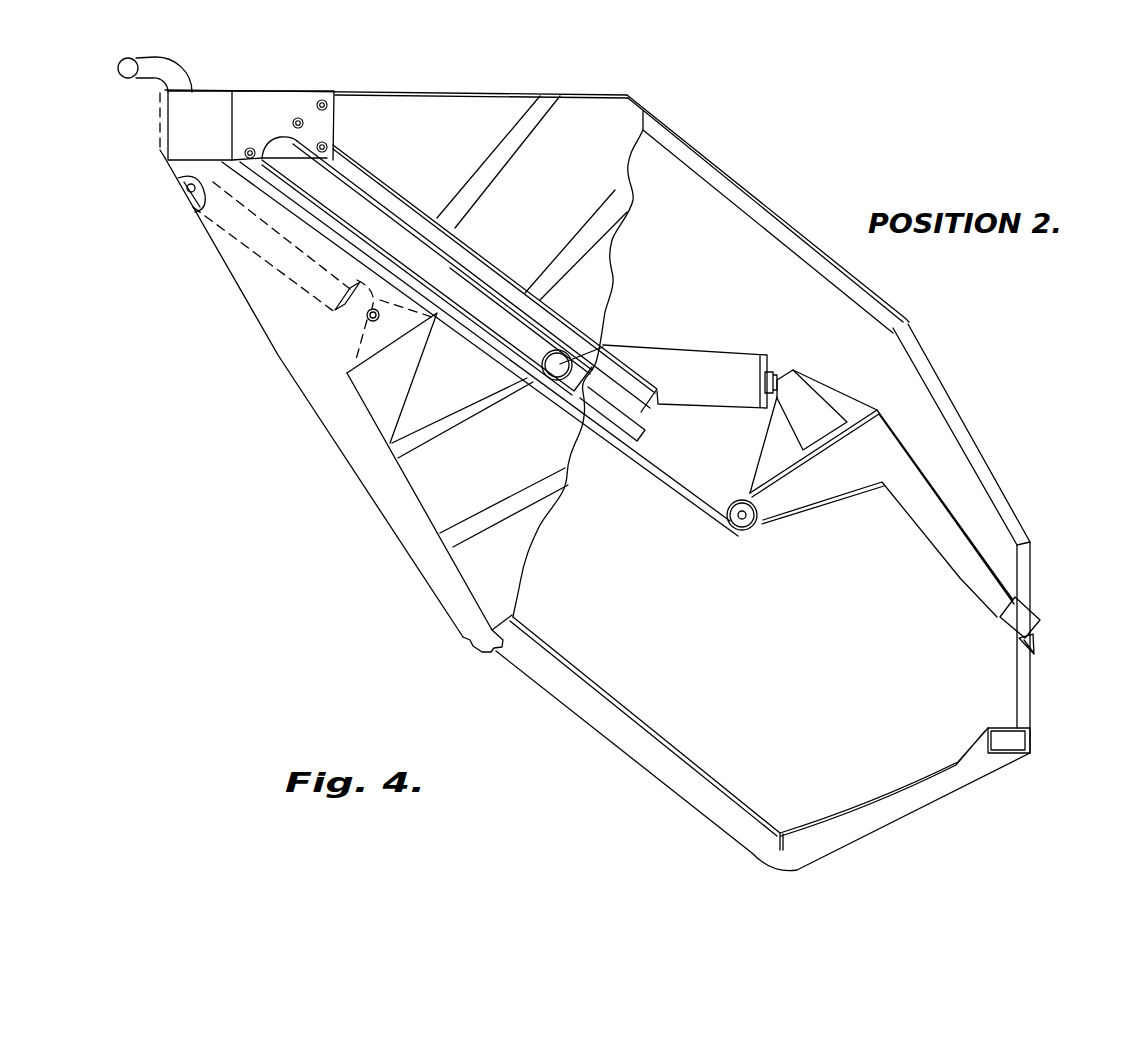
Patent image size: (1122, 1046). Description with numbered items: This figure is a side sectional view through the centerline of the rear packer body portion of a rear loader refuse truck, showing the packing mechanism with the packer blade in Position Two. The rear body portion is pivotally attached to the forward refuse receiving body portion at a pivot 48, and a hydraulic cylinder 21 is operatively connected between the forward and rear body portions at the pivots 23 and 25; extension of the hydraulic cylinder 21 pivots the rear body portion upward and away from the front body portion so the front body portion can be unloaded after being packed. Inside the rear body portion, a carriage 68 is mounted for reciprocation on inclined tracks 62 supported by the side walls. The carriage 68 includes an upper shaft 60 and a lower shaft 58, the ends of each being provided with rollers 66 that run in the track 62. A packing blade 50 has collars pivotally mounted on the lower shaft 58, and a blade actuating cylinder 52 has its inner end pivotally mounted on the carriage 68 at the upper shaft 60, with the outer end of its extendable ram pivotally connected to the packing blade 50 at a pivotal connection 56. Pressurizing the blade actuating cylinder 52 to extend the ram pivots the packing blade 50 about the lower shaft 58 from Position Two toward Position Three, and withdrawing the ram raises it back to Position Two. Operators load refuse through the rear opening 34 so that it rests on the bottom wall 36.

The hydraulic cylinder 21 is at (262, 247).
The pivot 23 is at (178, 181).
The pivot 25 is at (368, 322).
The rear opening 34 is at (993, 535).
The bottom wall 36 is at (857, 810).
The pivot 48 is at (126, 69).
The packing blade 50 is at (882, 440).
The blade actuating cylinder 52 is at (693, 355).
The pivotal connection 56 is at (795, 382).
The lower shaft 58 is at (743, 518).
The upper shaft 60 is at (598, 346).
The inclined tracks 62 is at (362, 212).
The rollers 66 is at (556, 364).
The carriage 68 is at (660, 466).